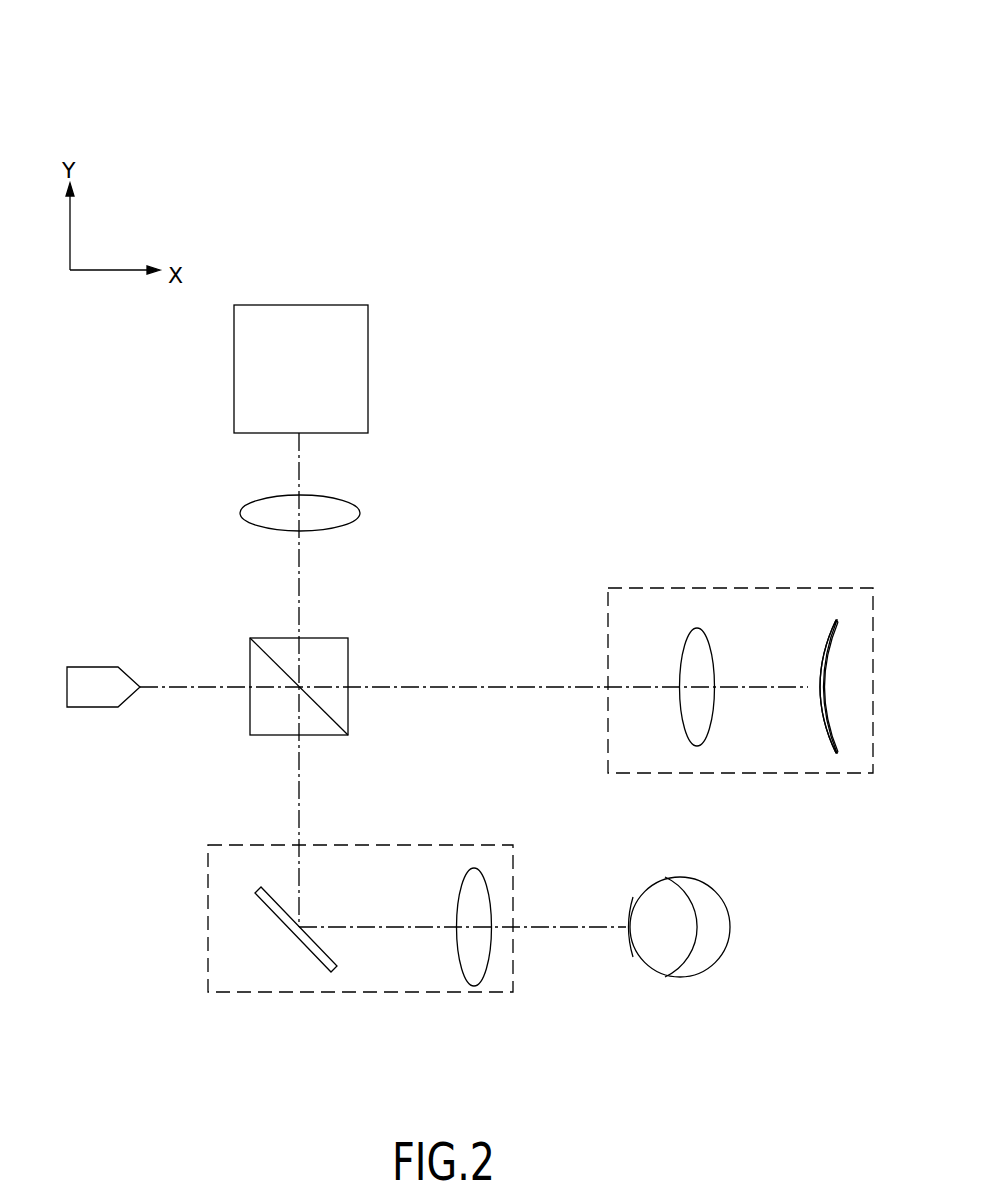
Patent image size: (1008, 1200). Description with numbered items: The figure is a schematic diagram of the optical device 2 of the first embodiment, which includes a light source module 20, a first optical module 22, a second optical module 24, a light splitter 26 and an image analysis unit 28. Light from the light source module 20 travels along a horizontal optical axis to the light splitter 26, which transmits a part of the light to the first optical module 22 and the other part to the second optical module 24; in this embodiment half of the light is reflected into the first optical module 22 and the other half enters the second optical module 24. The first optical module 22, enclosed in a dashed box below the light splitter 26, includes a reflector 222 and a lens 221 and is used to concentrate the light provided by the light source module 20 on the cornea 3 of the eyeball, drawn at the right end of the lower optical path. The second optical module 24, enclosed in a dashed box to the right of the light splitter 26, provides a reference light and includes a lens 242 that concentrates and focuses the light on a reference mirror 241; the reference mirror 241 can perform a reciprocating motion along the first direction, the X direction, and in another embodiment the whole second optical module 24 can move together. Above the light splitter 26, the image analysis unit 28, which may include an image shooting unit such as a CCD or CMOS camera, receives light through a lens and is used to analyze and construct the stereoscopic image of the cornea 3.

The optical device 2 is at (336, 66).
The light source module 20 is at (88, 667).
The light splitter 26 is at (348, 670).
The image analysis unit 28 is at (368, 370).
The second optical module 24 is at (768, 588).
The reference mirror 241 is at (808, 702).
The lens 242 is at (680, 702).
The first optical module 22 is at (387, 845).
The lens 221 is at (457, 937).
The reflector 222 is at (282, 924).
The cornea 3 is at (673, 877).